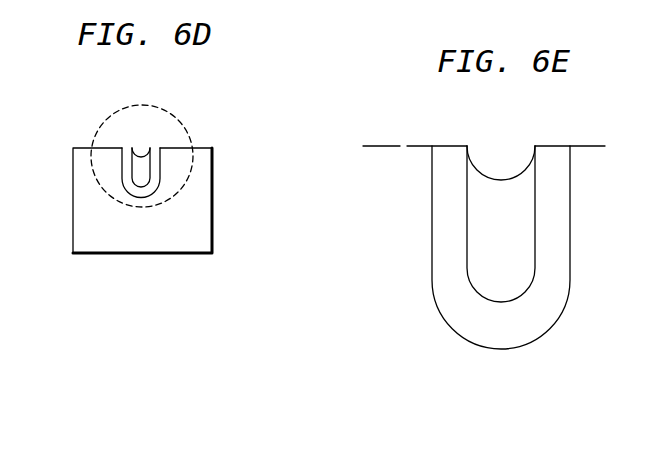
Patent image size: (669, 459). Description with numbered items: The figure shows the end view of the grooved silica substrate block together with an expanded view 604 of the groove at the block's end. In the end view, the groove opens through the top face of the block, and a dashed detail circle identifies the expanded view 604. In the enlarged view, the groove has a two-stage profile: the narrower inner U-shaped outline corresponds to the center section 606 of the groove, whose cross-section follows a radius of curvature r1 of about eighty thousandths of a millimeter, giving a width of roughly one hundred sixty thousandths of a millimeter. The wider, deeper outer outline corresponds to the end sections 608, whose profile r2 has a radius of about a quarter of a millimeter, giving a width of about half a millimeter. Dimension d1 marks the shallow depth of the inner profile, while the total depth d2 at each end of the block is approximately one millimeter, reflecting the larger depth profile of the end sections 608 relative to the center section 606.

In FIG. 6D, the expanded view 604 is at (179, 117).
In FIG. 6E, the center section 606 is at (522, 225).
In FIG. 6E, the end sections 608 is at (558, 292).
In FIG. 6E, the radius of curvature at region 606 r1 is at (480, 168).
In FIG. 6E, the profile radius at sections 608 r2 is at (545, 333).
In FIG. 6E, the depth of upper groove arc d1 is at (639, 100).
In FIG. 6E, the depth at each end of the block d2 is at (468, 350).